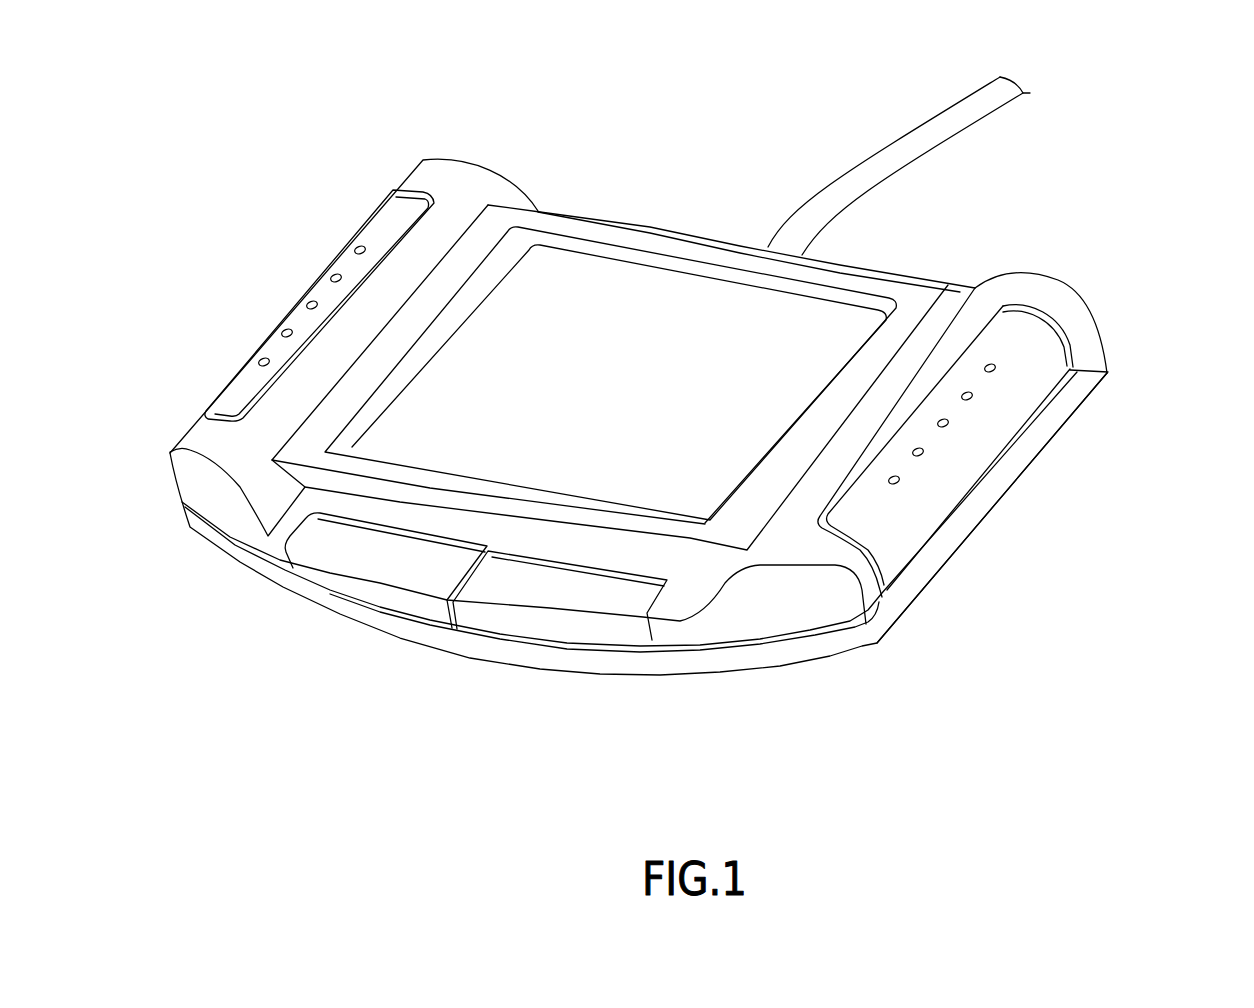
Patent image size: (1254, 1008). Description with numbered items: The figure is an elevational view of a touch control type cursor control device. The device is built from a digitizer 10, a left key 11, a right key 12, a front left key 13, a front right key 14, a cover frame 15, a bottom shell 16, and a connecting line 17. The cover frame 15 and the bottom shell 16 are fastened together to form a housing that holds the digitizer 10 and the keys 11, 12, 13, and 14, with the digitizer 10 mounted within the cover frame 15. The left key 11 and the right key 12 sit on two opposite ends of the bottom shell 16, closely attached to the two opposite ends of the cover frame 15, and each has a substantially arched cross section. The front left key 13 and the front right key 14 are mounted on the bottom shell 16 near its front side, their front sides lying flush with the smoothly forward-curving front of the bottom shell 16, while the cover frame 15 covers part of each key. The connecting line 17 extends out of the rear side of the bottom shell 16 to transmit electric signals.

The digitizer 10 is at (595, 287).
The left key 11 is at (325, 293).
The right key 12 is at (985, 427).
The front left key 13 is at (370, 555).
The front right key 14 is at (560, 584).
The cover frame 15 is at (738, 528).
The bottom shell 16 is at (930, 562).
The connecting line 17 is at (833, 203).